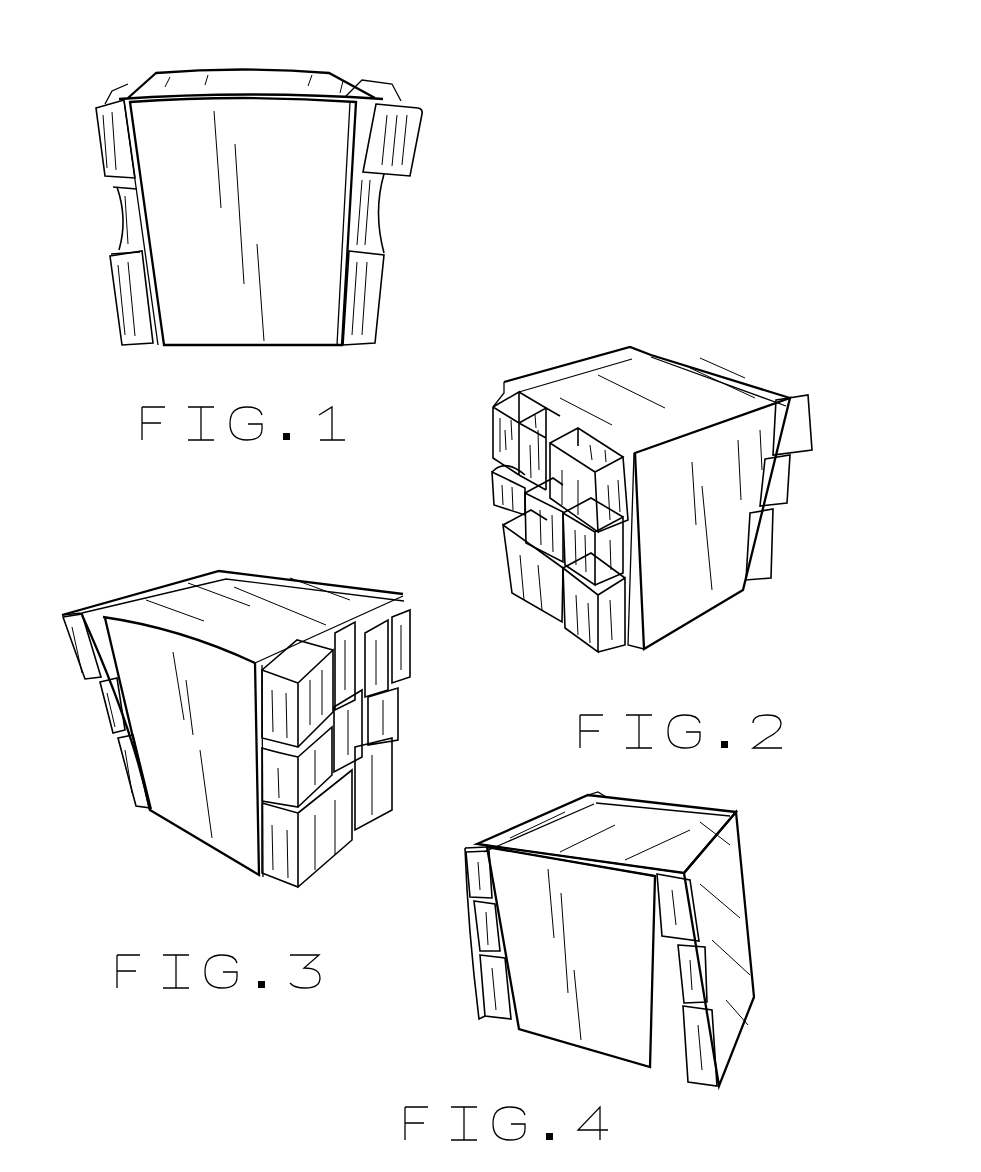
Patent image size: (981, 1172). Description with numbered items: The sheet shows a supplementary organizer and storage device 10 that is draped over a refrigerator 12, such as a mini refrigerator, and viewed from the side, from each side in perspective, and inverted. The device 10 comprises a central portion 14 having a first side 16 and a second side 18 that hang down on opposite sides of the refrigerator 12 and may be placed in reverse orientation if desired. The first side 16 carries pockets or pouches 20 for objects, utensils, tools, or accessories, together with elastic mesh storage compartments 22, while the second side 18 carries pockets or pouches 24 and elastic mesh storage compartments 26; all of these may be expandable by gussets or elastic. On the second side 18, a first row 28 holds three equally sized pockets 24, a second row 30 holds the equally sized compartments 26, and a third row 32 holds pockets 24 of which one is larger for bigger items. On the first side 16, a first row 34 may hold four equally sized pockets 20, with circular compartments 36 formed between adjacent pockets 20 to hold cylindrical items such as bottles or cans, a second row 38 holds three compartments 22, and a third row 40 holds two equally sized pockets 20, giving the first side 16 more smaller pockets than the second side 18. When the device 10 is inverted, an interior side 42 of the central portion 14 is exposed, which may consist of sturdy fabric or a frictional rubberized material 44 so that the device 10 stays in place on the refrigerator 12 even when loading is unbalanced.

In FIG. 1, the supplementary organizer and storage device 10 is at (88, 92).
In FIG. 2, the supplementary organizer and storage device 10 is at (490, 370).
In FIG. 3, the supplementary organizer and storage device 10 is at (107, 588).
In FIG. 4, the supplementary organizer and storage device 10 is at (763, 832).
In FIG. 1, the refrigerator 12 is at (180, 167).
In FIG. 2, the refrigerator 12 is at (730, 486).
In FIG. 3, the refrigerator 12 is at (160, 681).
In FIG. 4, the refrigerator 12 is at (534, 960).
In FIG. 1, the central portion 14 is at (271, 86).
In FIG. 2, the central portion 14 is at (687, 380).
In FIG. 3, the central portion 14 is at (200, 606).
In FIG. 1, the first side 16 is at (408, 88).
In FIG. 2, the first side 16 is at (814, 432).
In FIG. 3, the first side 16 is at (351, 852).
In FIG. 1, the second side 18 is at (100, 84).
In FIG. 2, the second side 18 is at (472, 541).
In FIG. 3, the second side 18 is at (98, 742).
In FIG. 1, the pockets or pouches 20 is at (415, 145).
In FIG. 3, the pockets or pouches 20 is at (295, 669).
In FIG. 1, the elastic mesh storage compartments 22 is at (380, 214).
In FIG. 3, the elastic mesh storage compartments 22 is at (402, 718).
In FIG. 1, the pockets or pouches 24 is at (99, 136).
In FIG. 2, the pockets or pouches 24 is at (492, 426).
In FIG. 1, the elastic mesh storage compartments 26 is at (117, 215).
In FIG. 2, the elastic mesh storage compartments 26 is at (488, 497).
In FIG. 2, the first row 28 is at (482, 446).
In FIG. 2, the second row 30 is at (482, 505).
In FIG. 2, the third row 32 is at (515, 615).
In FIG. 3, the first row 34 is at (424, 656).
In FIG. 3, the circular compartments 36 is at (341, 657).
In FIG. 3, the second row 38 is at (414, 705).
In FIG. 3, the third row 40 is at (410, 780).
In FIG. 4, the interior side 42 is at (580, 792).
In FIG. 4, the frictional rubberized material 44 is at (645, 831).